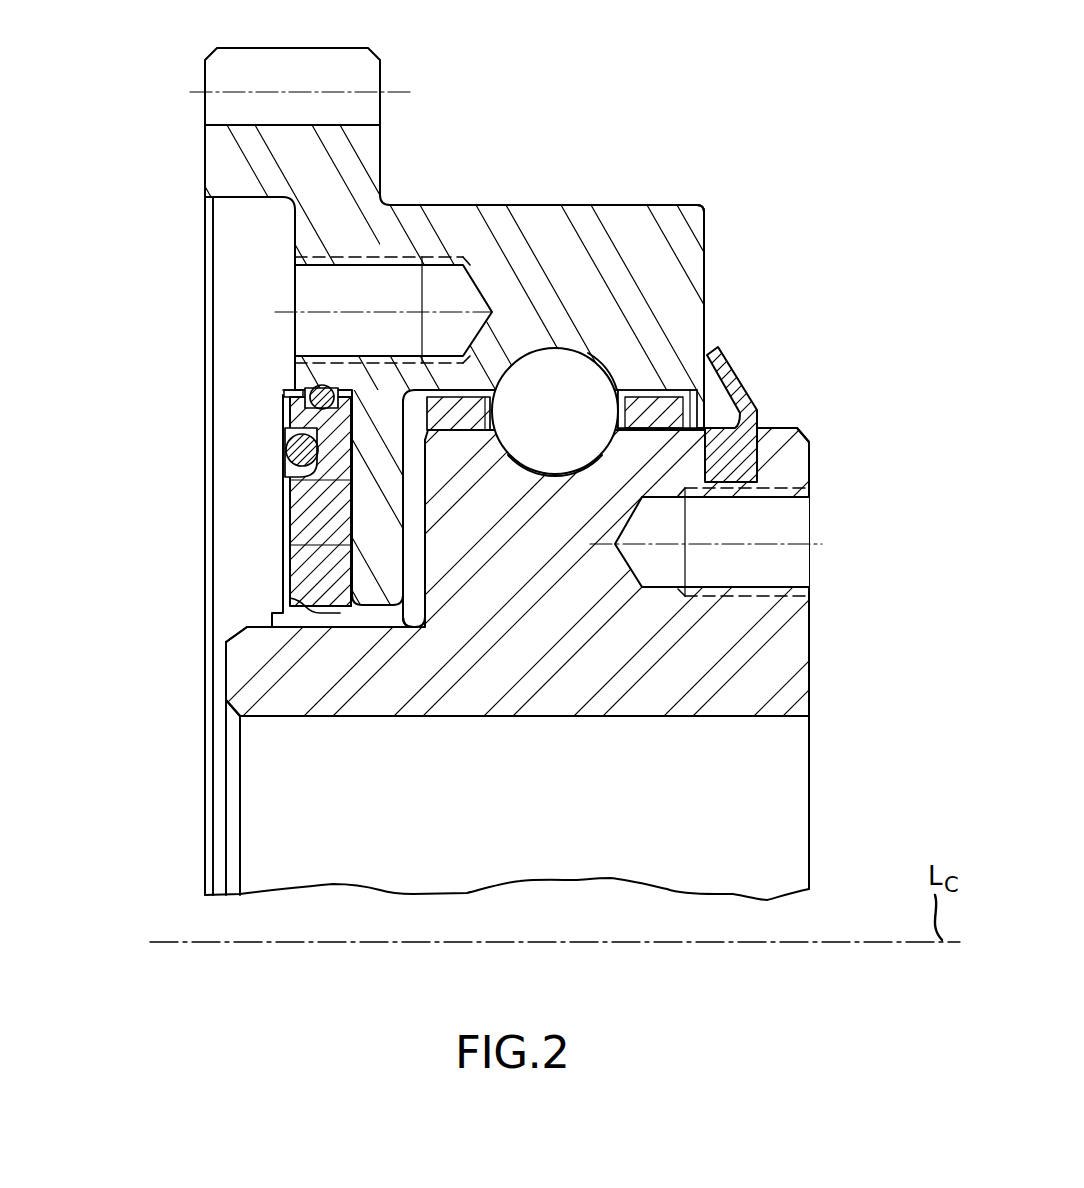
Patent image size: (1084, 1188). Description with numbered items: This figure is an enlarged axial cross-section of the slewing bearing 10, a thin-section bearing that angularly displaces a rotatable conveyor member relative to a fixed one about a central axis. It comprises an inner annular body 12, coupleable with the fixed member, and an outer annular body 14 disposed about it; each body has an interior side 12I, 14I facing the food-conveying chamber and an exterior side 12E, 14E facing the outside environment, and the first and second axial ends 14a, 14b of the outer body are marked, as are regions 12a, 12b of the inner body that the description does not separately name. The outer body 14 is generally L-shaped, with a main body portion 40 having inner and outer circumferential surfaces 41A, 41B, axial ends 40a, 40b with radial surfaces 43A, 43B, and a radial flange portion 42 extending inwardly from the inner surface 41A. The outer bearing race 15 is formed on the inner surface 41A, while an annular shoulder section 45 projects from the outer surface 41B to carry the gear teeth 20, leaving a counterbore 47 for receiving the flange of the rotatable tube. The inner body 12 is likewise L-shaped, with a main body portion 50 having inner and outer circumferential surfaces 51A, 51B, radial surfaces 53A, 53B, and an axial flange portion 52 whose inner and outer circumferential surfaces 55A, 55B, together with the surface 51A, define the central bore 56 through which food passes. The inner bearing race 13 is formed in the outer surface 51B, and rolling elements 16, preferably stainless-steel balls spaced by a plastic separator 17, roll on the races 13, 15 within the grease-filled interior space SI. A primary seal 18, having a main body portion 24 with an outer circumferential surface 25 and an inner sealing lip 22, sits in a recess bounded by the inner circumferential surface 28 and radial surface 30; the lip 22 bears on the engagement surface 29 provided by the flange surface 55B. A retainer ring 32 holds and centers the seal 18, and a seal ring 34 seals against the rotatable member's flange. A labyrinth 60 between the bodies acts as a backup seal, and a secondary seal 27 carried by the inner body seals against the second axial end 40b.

The slewing bearing 10 is at (135, 235).
The inner annular body 12 is at (865, 577).
The axial face of second ring 12a is at (225, 700).
The outer surface of second ring 12b is at (810, 645).
The exterior side of inner annular body 12E is at (810, 455).
The interior side of inner annular body 12I is at (220, 675).
The inner bearing race 13 is at (567, 462).
The outer annular body 14 is at (438, 448).
The first axial end of outer annular body 14a is at (198, 168).
The second axial end of outer annular body 14b is at (712, 242).
The exterior side of outer annular body 14E is at (705, 267).
The interior side of outer annular body 14I is at (352, 507).
The outer bearing race 15 is at (549, 356).
The rolling elements 16 is at (610, 382).
The plastic separator 17 is at (468, 390).
The primary seal 18 is at (222, 445).
The gear teeth 20 is at (238, 63).
The inner sealing lip 22 is at (278, 612).
The main body portion of primary seal 24 is at (298, 543).
The outer circumferential surface of seal 25 is at (350, 365).
The secondary seal 27 is at (745, 381).
The inner circumferential surface of recess 28 is at (292, 396).
The engagement surface 29 is at (290, 630).
The radial surface of recess 30 is at (351, 451).
The retainer ring 32 is at (295, 388).
The seal ring 34 is at (292, 443).
The main body portion of outer annular body 40 is at (662, 212).
The first axial end of main body portion 40a is at (293, 230).
The second axial end of main body portion 40b is at (706, 312).
The inner circumferential surface of main body portion 41A is at (668, 393).
The outer circumferential surface of main body portion 41B is at (556, 205).
The radial flange portion 42 is at (362, 478).
The first radial surface of main body portion 43A is at (293, 248).
The second radial surface of main body portion 43B is at (707, 222).
The annular shoulder section 45 is at (218, 140).
The counterbore 47 is at (253, 198).
The main body portion of inner annular body 50 is at (776, 625).
The inner circumferential surface of inner main body portion 51A is at (665, 718).
The outer circumferential surface of inner main body portion 51B is at (452, 418).
The axial flange portion 52 is at (260, 657).
The first radial surface of inner main body portion 53A is at (420, 540).
The second radial surface of inner main body portion 53B is at (810, 685).
The inner circumferential surface of axial flange portion 55A is at (320, 718).
The outer circumferential surface of axial flange portion 55B is at (387, 690).
The central bore 56 is at (786, 828).
The labyrinth 60 is at (428, 507).
The interior space SI is at (645, 392).